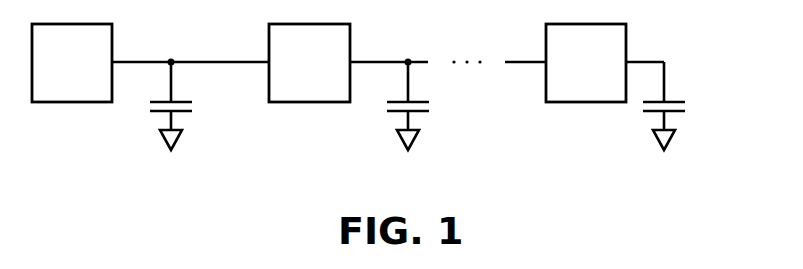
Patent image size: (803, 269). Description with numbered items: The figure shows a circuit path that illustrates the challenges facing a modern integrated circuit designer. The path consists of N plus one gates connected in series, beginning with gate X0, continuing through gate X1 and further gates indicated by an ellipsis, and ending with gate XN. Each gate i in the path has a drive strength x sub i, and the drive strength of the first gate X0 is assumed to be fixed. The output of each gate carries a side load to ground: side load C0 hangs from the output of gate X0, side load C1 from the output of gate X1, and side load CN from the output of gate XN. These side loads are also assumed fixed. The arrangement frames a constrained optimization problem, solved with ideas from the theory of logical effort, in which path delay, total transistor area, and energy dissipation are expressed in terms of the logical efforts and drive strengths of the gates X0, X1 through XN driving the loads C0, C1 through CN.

The gate 0 X0 is at (72, 63).
The gate 1 X1 is at (309, 63).
The gate N XN is at (586, 63).
The side load C0 is at (186, 106).
The side load C1 is at (424, 106).
The side load CN is at (680, 106).